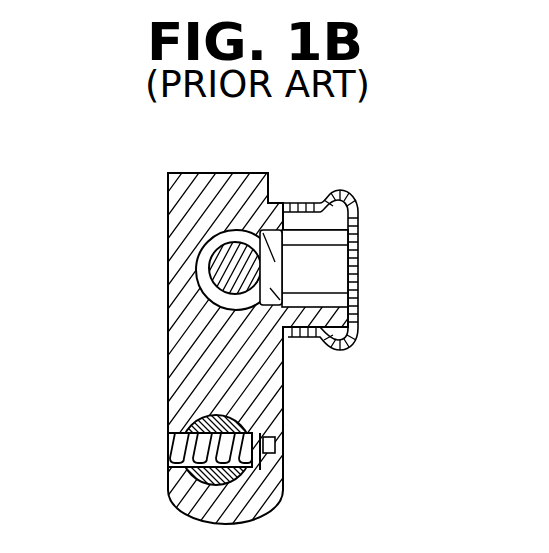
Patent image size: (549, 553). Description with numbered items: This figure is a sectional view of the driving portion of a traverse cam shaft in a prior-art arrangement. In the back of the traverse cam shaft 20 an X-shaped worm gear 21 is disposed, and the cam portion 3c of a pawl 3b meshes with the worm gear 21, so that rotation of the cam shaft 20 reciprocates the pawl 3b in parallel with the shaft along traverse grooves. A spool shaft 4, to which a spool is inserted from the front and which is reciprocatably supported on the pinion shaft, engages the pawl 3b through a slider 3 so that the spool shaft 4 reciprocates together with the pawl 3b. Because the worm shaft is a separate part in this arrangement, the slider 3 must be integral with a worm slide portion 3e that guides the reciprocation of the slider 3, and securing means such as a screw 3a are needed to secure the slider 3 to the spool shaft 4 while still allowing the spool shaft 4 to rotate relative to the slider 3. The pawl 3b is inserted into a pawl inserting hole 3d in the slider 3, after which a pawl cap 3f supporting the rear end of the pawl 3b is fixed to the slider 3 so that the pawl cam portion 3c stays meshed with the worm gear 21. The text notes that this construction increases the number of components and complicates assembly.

The slider 3 is at (247, 381).
The screw 3a is at (272, 461).
The pawl 3b is at (322, 274).
The cam portion 3c is at (272, 222).
The pawl inserting hole 3d is at (336, 240).
The worm slide portion 3e is at (173, 323).
The pawl cap 3f is at (344, 346).
The spool shaft 4 is at (232, 492).
The traverse cam shaft 20 is at (222, 266).
The worm gear 21 is at (212, 248).